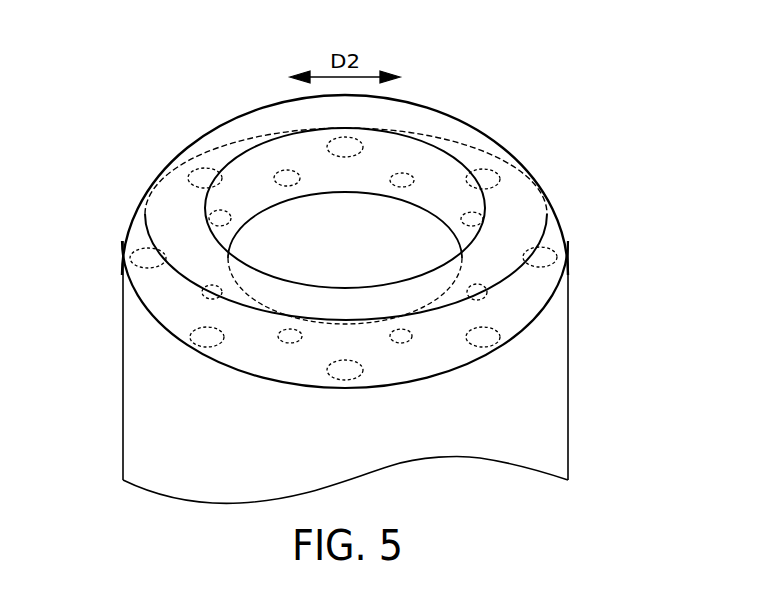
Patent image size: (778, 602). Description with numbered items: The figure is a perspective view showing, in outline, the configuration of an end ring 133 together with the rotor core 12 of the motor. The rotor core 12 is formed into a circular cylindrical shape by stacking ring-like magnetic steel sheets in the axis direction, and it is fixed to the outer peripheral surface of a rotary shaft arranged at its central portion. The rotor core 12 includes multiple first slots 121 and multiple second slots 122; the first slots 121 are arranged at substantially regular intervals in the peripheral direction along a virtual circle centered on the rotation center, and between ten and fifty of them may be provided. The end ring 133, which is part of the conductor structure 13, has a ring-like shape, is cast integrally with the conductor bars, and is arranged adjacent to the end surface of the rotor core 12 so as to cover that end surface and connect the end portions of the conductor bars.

The rotor core 12 is at (568, 383).
The flange 13 is at (345, 233).
The end ring 133 is at (473, 121).
The first slot 121 is at (132, 267).
The second slot 122 is at (280, 181).